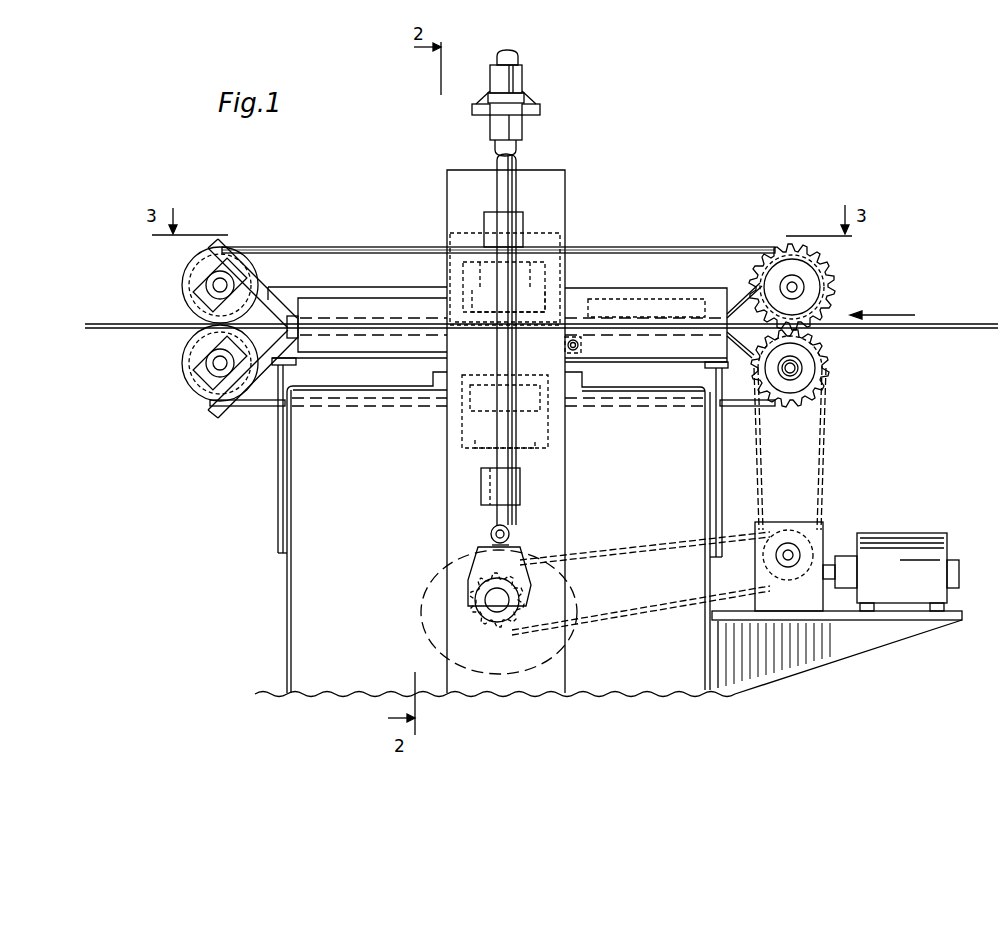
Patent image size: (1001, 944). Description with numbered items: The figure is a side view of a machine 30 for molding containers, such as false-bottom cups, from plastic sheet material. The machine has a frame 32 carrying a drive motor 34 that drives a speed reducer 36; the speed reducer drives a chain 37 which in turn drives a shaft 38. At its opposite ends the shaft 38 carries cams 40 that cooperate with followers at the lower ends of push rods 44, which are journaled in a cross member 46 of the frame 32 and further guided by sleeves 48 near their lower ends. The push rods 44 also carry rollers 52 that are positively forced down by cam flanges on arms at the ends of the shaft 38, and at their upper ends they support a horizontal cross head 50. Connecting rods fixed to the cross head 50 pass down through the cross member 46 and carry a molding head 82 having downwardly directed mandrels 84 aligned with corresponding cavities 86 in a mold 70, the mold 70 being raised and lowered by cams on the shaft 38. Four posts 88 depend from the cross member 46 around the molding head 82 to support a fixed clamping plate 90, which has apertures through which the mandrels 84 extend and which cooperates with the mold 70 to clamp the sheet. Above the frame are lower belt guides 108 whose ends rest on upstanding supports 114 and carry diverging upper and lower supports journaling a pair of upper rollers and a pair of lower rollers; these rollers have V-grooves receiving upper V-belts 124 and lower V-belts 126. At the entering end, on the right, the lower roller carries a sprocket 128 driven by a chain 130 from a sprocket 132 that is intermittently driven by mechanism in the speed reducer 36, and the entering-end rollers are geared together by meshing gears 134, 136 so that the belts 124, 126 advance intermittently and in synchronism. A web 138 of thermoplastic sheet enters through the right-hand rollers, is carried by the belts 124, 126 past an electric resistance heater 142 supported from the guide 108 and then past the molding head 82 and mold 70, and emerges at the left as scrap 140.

The machine 30 is at (396, 221).
The frame 32 is at (300, 596).
The drive motor 34 is at (903, 533).
The speed reducer 36 is at (818, 522).
The chain 37 is at (645, 608).
The shaft 38 is at (490, 600).
The cams 40 is at (478, 556).
The push rods 44 is at (497, 462).
The cross member 46 is at (561, 191).
The guides or sleeves 48 is at (484, 487).
The cross head 50 is at (542, 108).
The rollers 52 is at (509, 537).
The mold 70 is at (474, 421).
The molding head 82 is at (540, 272).
The mandrels 84 is at (480, 302).
The cavities 86 is at (530, 410).
The posts 88 is at (556, 262).
The clamping plate 90 is at (455, 322).
The lower belt guides 108 is at (641, 346).
The supports 114 is at (282, 458).
The upper V-belts 124 is at (686, 255).
The lower V-belts 126 is at (740, 401).
The sprocket 128 is at (830, 384).
The chain 130 is at (820, 455).
The sprocket 132 is at (800, 563).
The gear 134 is at (838, 289).
The gear 136 is at (834, 368).
The web or film 138 is at (950, 329).
The scrap 140 is at (90, 330).
The electric resistance heater 142 is at (664, 302).